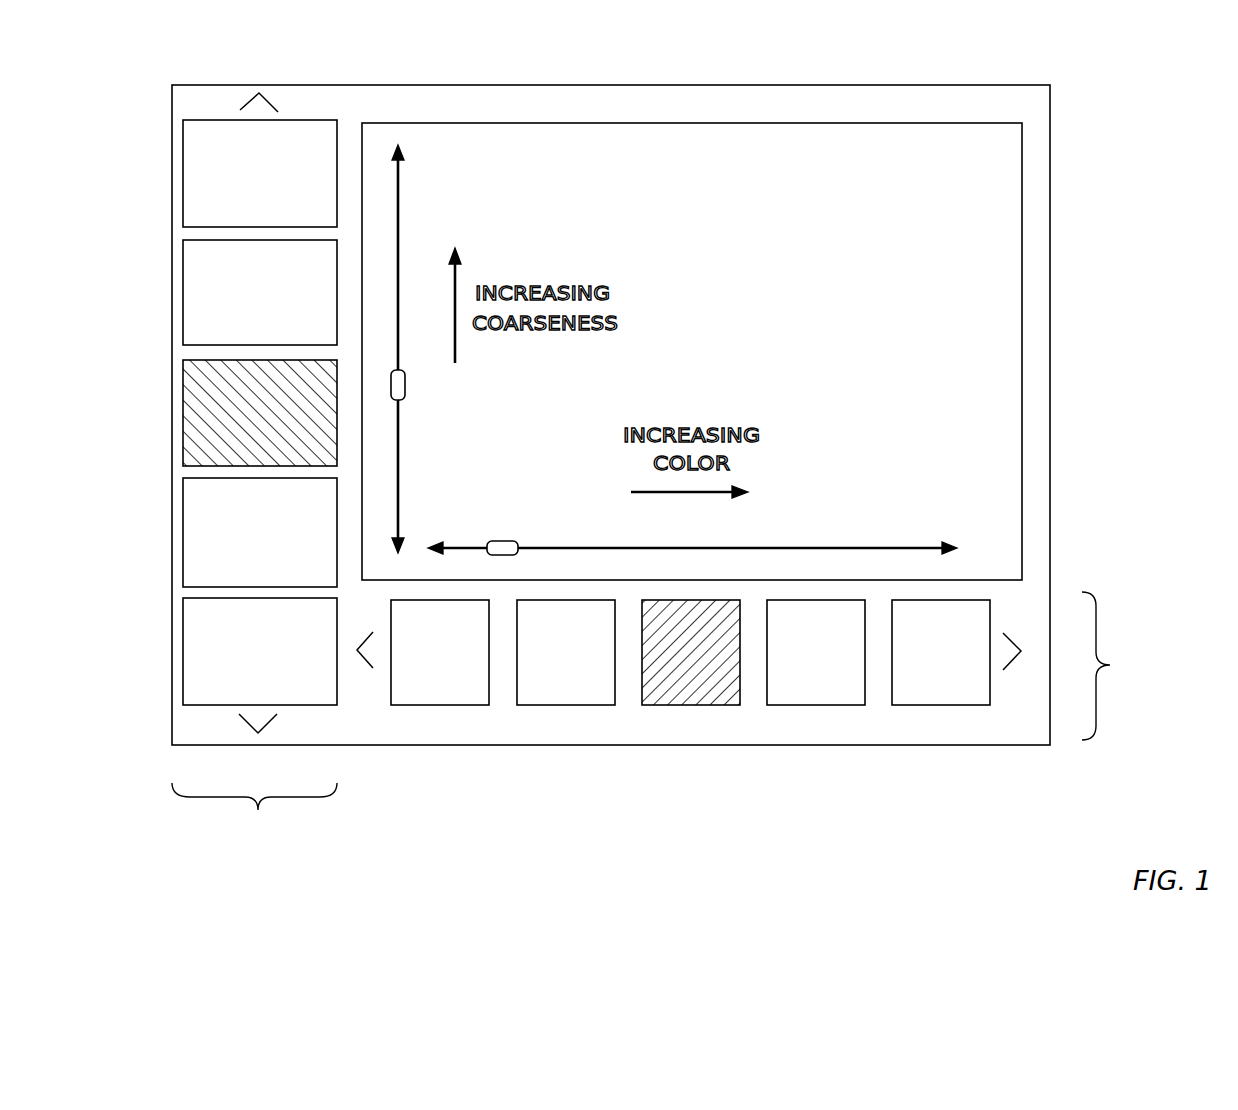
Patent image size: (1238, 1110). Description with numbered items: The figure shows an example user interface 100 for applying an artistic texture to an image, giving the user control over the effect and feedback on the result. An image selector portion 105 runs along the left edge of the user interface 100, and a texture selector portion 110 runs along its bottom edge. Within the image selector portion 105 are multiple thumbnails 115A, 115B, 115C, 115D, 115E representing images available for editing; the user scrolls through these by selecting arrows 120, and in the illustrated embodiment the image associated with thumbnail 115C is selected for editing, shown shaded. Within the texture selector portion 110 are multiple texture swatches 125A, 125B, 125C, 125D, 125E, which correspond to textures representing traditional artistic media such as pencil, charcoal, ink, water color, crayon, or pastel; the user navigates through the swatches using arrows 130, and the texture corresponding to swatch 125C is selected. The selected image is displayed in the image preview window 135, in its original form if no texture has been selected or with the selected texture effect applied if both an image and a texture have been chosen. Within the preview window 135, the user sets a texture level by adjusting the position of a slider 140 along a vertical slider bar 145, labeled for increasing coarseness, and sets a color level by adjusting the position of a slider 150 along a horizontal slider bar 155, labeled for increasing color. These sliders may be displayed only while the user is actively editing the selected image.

The user interface 100 is at (1128, 153).
The image selector portion 105 is at (254, 815).
The texture selector portion 110 is at (1123, 666).
The thumbnail 115A is at (213, 173).
The thumbnail 115B is at (213, 292).
The thumbnail 115C is at (213, 413).
The thumbnail 115D is at (213, 532).
The thumbnail 115E is at (213, 651).
The arrows 120 is at (189, 414).
The texture swatch 125A is at (460, 697).
The texture swatch 125B is at (586, 697).
The texture swatch 125C is at (709, 697).
The texture swatch 125D is at (835, 697).
The texture swatch 125E is at (960, 697).
The arrows 130 is at (738, 735).
The image preview window 135 is at (746, 351).
The slider 140 is at (437, 397).
The slider bar 145 is at (435, 349).
The slider 150 is at (534, 529).
The slider bar 155 is at (692, 531).